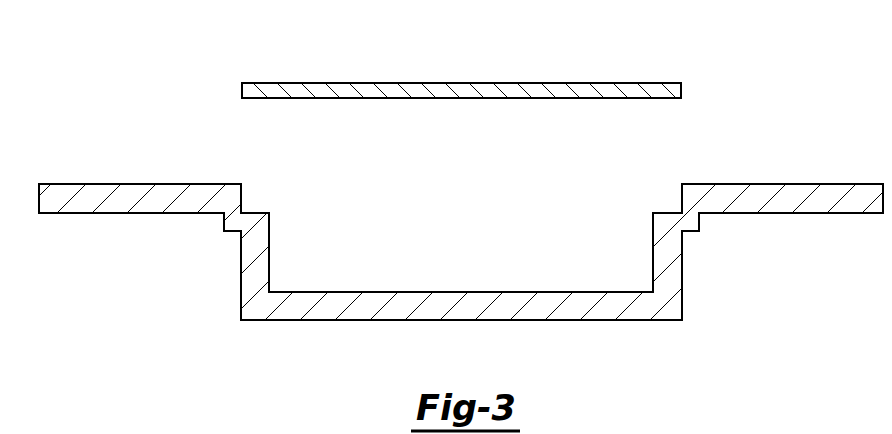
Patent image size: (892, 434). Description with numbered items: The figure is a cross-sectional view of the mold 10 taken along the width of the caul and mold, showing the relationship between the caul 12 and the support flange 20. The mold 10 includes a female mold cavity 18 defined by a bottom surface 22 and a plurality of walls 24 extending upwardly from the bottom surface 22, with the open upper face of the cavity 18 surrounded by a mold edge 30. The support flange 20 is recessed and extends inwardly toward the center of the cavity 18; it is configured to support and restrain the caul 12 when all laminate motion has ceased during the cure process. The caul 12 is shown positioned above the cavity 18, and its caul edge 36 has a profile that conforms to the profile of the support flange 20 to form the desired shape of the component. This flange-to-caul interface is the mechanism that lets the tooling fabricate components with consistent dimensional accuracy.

The mold 10 is at (683, 275).
The caul 12 is at (355, 83).
The female mold cavity 18 is at (390, 202).
The support flange 20 is at (258, 212).
The bottom surface 22 is at (450, 291).
The walls 24 is at (270, 268).
The mold edge 30 is at (243, 185).
The caul edge 36 is at (681, 90).